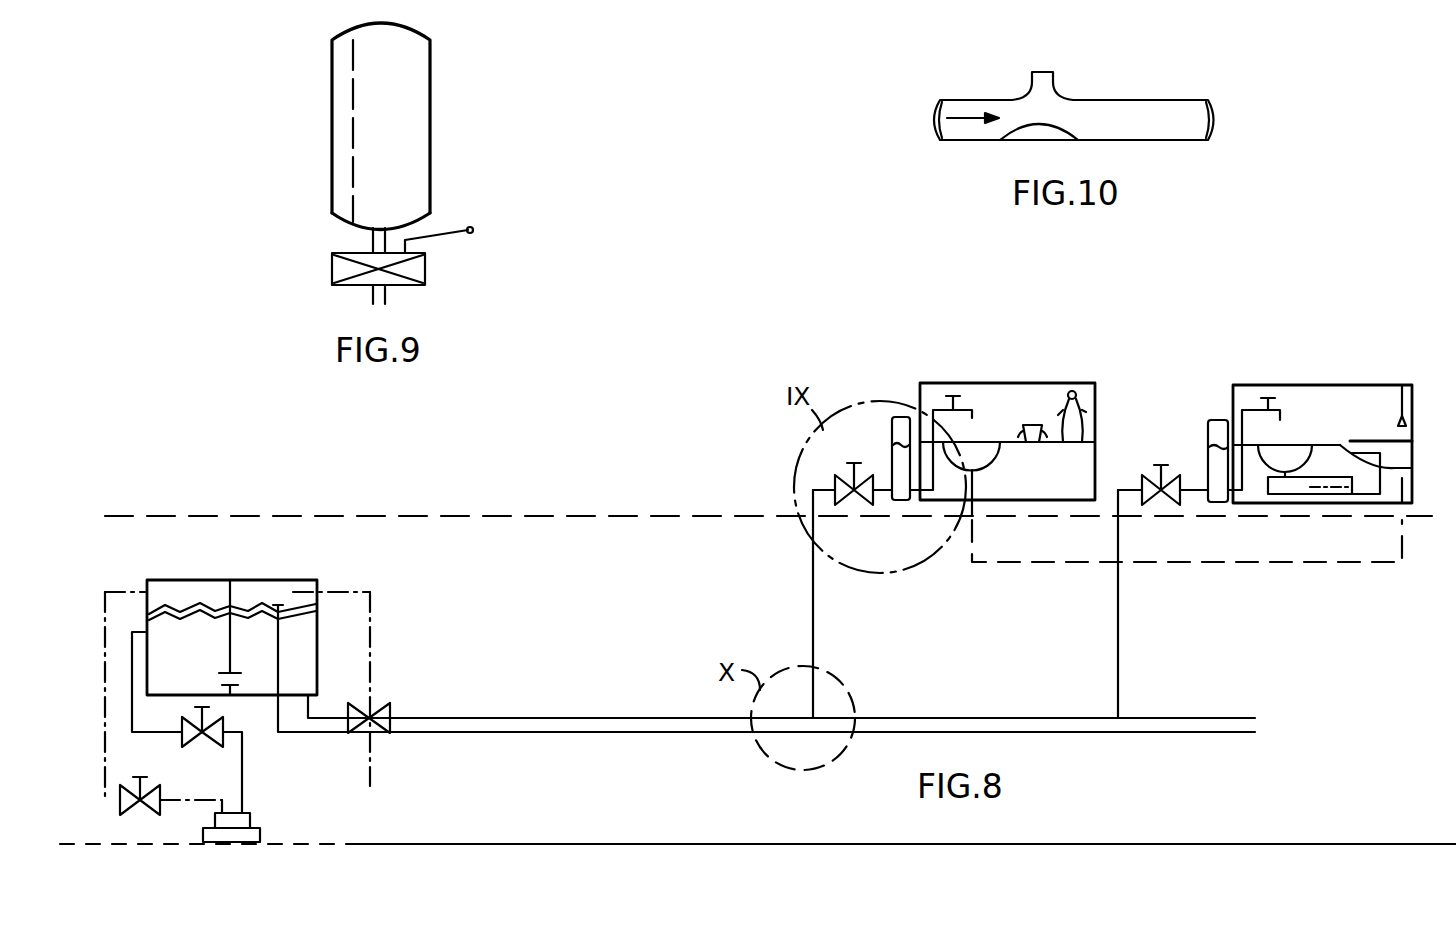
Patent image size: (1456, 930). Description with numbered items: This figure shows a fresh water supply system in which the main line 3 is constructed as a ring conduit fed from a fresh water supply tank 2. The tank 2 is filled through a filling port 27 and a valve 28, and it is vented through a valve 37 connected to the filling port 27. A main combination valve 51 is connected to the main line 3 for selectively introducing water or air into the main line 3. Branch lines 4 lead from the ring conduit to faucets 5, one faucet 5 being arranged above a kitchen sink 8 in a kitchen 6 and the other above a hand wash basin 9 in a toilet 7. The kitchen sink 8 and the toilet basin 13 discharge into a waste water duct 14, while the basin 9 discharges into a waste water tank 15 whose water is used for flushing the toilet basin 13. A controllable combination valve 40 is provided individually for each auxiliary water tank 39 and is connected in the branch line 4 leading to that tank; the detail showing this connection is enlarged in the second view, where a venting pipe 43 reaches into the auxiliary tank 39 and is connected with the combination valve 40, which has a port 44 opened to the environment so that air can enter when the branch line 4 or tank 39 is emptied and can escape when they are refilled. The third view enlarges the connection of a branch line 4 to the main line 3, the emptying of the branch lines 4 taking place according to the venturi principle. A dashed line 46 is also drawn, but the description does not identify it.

In FIG. 8, the fresh water supply tank 2 is at (258, 580).
In FIG. 10, the main line 3 is at (1180, 107).
In FIG. 8, the main line 3 is at (553, 716).
In FIG. 10, the branch line 4 is at (1054, 80).
In FIG. 8, the branch line 4 is at (1118, 598).
In FIG. 8, the faucet 5 is at (970, 415).
In FIG. 8, the kitchen 6 is at (1038, 383).
In FIG. 8, the toilet 7 is at (1383, 386).
In FIG. 8, the kitchen sink 8 is at (983, 442).
In FIG. 8, the hand wash basin 9 is at (1300, 448).
In FIG. 8, the toilet basin 13 is at (1397, 468).
In FIG. 8, the waste water duct 14 is at (1222, 565).
In FIG. 8, the waste water tank 15 is at (1355, 500).
In FIG. 8, the filling port 27 is at (262, 837).
In FIG. 8, the valve 28 is at (223, 720).
In FIG. 8, the valve 37 is at (120, 806).
In FIG. 9, the auxiliary water tank 39 is at (430, 120).
In FIG. 8, the auxiliary water tank 39 is at (900, 417).
In FIG. 9, the combination valve 40 is at (332, 270).
In FIG. 8, the combination valve 40 is at (877, 476).
In FIG. 9, the venting pipe 43 is at (353, 52).
In FIG. 9, the port 44 is at (473, 229).
In FIG. 8, the floor level 46 is at (483, 516).
In FIG. 8, the main combination valve 51 is at (390, 712).